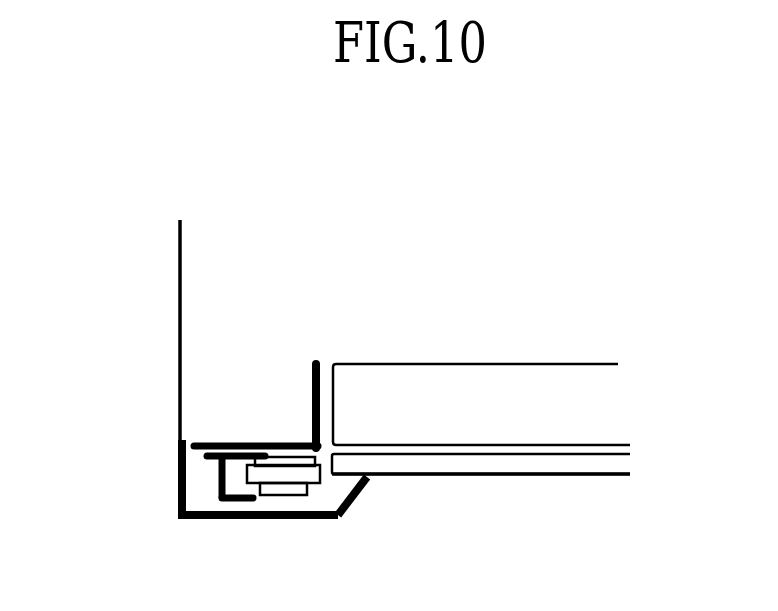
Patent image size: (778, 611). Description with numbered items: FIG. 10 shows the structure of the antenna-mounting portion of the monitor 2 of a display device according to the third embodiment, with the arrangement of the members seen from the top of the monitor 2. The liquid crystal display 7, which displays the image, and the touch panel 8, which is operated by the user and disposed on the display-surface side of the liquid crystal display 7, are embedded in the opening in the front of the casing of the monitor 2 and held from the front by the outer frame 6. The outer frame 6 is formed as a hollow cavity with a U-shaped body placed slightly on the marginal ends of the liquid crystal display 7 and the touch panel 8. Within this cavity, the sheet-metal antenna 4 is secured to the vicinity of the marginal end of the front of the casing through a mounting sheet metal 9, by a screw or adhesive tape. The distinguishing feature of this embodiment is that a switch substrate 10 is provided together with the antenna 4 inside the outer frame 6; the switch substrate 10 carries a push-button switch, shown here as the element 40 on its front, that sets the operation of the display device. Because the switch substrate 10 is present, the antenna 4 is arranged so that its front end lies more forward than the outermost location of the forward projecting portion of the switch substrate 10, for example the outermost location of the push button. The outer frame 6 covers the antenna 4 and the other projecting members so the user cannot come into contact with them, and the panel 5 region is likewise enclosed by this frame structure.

The monitor 2 is at (178, 292).
The antenna 4 is at (218, 487).
The display panel 5 is at (588, 476).
The outer frame 6 is at (320, 518).
The liquid crystal display 7 is at (532, 371).
The touch panel 8 is at (465, 476).
The mounting sheet metal 9 is at (312, 380).
The switch substrate 10 is at (280, 456).
The light emitting element 40 is at (278, 497).